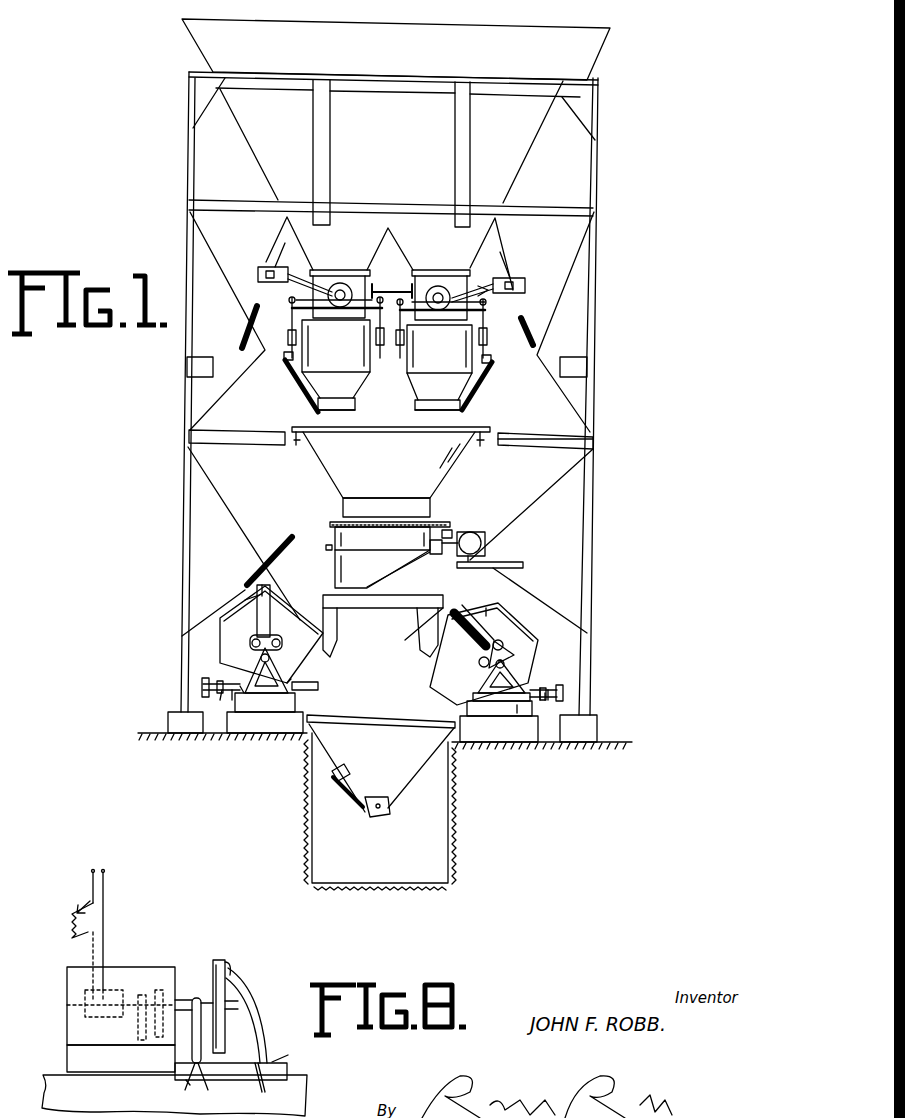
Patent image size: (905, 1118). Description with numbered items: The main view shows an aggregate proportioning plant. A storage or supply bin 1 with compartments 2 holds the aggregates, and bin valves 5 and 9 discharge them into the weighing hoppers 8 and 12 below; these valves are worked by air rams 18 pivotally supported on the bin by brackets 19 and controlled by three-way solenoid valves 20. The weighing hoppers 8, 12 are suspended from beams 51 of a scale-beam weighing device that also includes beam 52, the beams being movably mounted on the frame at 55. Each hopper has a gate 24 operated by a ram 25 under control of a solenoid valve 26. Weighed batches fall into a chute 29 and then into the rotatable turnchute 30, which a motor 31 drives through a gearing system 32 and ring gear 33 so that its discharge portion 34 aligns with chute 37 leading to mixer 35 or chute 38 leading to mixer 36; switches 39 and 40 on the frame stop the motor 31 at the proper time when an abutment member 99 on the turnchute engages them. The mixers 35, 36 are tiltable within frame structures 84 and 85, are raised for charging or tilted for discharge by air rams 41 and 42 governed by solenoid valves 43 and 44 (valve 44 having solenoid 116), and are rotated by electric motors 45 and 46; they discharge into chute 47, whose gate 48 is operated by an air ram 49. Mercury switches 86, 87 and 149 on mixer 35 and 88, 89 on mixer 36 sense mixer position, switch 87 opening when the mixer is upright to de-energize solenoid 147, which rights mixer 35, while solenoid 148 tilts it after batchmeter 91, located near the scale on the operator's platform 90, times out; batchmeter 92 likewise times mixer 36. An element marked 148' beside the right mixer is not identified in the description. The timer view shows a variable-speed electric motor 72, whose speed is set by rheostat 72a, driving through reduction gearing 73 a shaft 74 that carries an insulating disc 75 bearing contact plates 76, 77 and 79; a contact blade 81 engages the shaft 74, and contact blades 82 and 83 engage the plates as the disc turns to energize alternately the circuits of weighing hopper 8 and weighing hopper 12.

In FIG. 1, the storage or supply bin 1 is at (592, 49).
In FIG. 1, the bin compartment 2 is at (268, 160).
In FIG. 1, the bin valve 5 is at (340, 281).
In FIG. 1, the weighing hopper 8 is at (352, 378).
In FIG. 1, the bin valve 9 is at (438, 284).
In FIG. 1, the weighing hopper 12 is at (425, 380).
In FIG. 1, the air ram 18 is at (262, 269).
In FIG. 1, the bracket 19 is at (279, 233).
In FIG. 1, the three-way solenoid operated valve 20 is at (270, 282).
In FIG. 1, the gate 24 is at (345, 412).
In FIG. 1, the ram 25 is at (285, 357).
In FIG. 1, the solenoid valve 26 is at (285, 372).
In FIG. 1, the chute 29 is at (456, 470).
In FIG. 1, the turnchute 30 is at (330, 536).
In FIG. 1, the motor 31 is at (472, 535).
In FIG. 1, the gearing system 32 is at (455, 530).
In FIG. 1, the ring gear 33 is at (332, 522).
In FIG. 1, the discharge portion 34 is at (335, 578).
In FIG. 1, the mixer 35 is at (310, 665).
In FIG. 1, the mixer 36 is at (445, 668).
In FIG. 1, the chute 37 is at (338, 628).
In FIG. 1, the chute 38 is at (420, 628).
In FIG. 1, the switch 39 is at (438, 556).
In FIG. 1, the switch 40 is at (328, 548).
In FIG. 1, the air ram 41 is at (203, 688).
In FIG. 1, the air ram 42 is at (565, 693).
In FIG. 1, the solenoid valve 43 is at (220, 700).
In FIG. 1, the solenoid valve 44 is at (545, 700).
In FIG. 1, the electric motor 45 is at (253, 660).
In FIG. 1, the electric motor 46 is at (530, 660).
In FIG. 1, the chute 47 is at (400, 780).
In FIG. 1, the gate 48 is at (378, 818).
In FIG. 1, the air ram 49 is at (348, 790).
In FIG. 1, the beam 51 is at (322, 270).
In FIG. 1, the beam 52 is at (336, 312).
In FIG. 1, the beam mounting 55 is at (480, 290).
In FIG. 1, the frame structure 84 is at (318, 690).
In FIG. 1, the frame structure 85 is at (517, 713).
In FIG. 1, the mercury switch 86 is at (240, 601).
In FIG. 1, the mercury switch 87 is at (272, 606).
In FIG. 1, the mercury switch 88 is at (474, 612).
In FIG. 1, the mercury switch 89 is at (496, 616).
In FIG. 1, the operator's platform 90 is at (530, 438).
In FIG. 1, the batchmeter 91 is at (188, 367).
In FIG. 1, the batchmeter 92 is at (590, 367).
In FIG. 1, the abutment member 99 is at (440, 552).
In FIG. 1, the solenoid 116 is at (540, 688).
In FIG. 1, the solenoid 147 is at (232, 690).
In FIG. 1, the solenoid 148 is at (195, 663).
In FIG. 1, the right control cable 148' is at (593, 672).
In FIG. 1, the mercury switch 149 is at (241, 585).
In FIG. 8, the electric variable speed motor 72 is at (67, 1005).
In FIG. 8, the rheostat 72a is at (80, 921).
In FIG. 8, the reduction gearing mechanism 73 is at (150, 990).
In FIG. 8, the shaft 74 is at (196, 998).
In FIG. 8, the rotatable disc 75 is at (222, 962).
In FIG. 8, the contact plate 76 is at (228, 966).
In FIG. 8, the contact plate 77 is at (226, 1062).
In FIG. 8, the contact plate 79 is at (236, 1006).
In FIG. 8, the contact blade 81 is at (192, 1040).
In FIG. 8, the contact blade 82 is at (266, 1011).
In FIG. 8, the contact blade 83 is at (262, 1031).